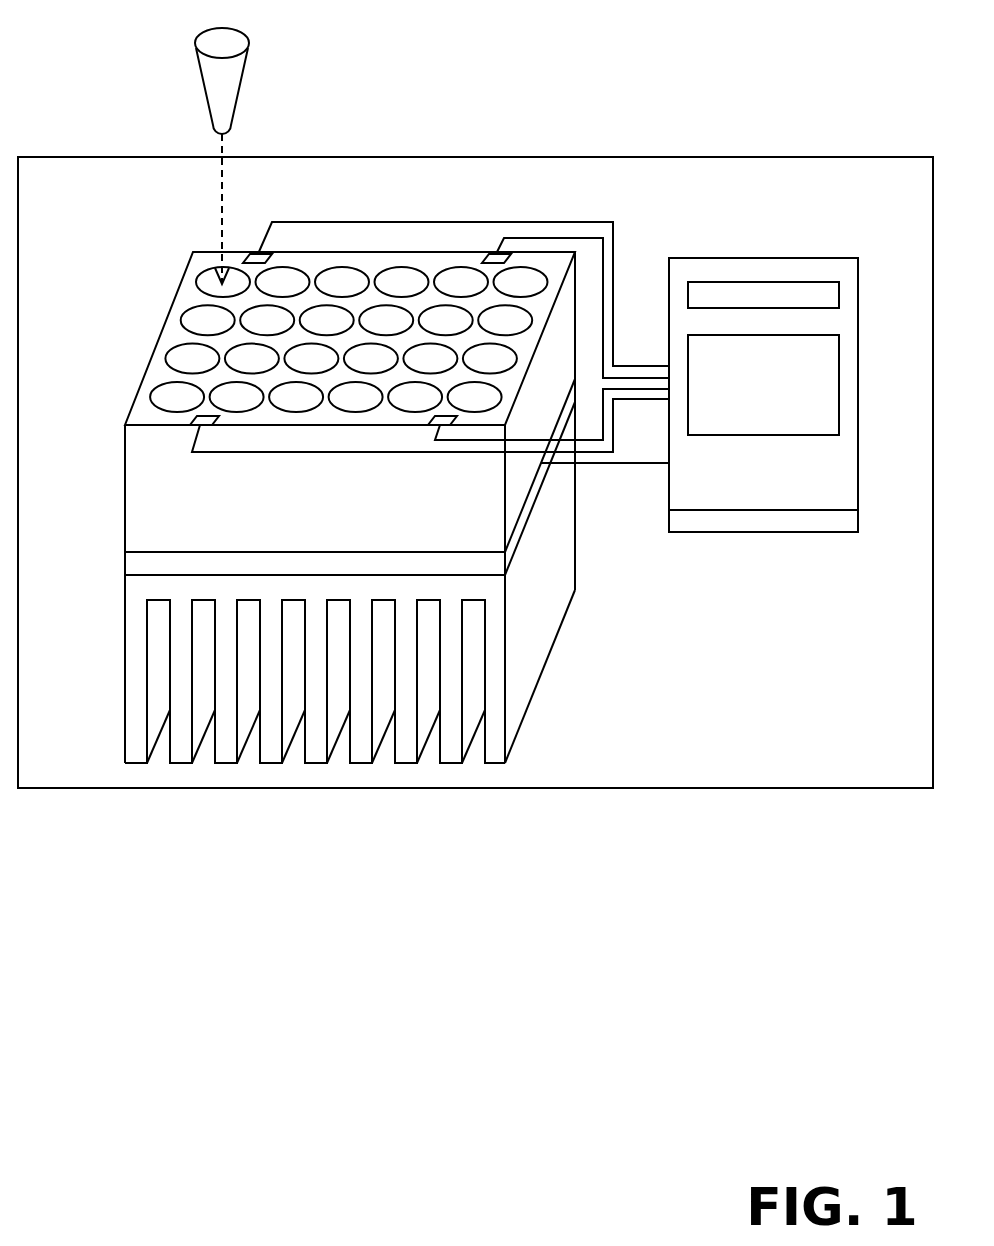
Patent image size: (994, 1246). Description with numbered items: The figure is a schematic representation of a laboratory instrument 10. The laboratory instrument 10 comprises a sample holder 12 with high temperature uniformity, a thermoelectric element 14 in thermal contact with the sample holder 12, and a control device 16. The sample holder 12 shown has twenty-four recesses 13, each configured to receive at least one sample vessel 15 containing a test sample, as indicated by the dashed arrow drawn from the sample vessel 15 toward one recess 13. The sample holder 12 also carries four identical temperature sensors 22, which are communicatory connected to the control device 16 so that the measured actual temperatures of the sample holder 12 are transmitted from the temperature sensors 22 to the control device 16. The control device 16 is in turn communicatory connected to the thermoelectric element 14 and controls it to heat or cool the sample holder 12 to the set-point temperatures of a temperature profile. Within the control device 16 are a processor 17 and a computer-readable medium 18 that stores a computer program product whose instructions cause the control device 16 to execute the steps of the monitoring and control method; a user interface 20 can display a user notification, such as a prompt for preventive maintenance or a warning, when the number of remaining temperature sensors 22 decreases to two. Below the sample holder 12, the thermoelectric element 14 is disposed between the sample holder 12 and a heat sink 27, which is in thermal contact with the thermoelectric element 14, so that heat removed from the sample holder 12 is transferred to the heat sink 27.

The laboratory instrument 10 is at (733, 157).
The sample holder 12 is at (141, 502).
The recess 13 is at (207, 280).
The thermoelectric element 14 is at (153, 563).
The sample vessel 15 is at (230, 87).
The control device 16 is at (669, 497).
The processor 17 is at (797, 295).
The computer-readable medium 18 is at (795, 413).
The user interface 20 is at (763, 533).
The temperature sensor 22 is at (429, 365).
The heat sink 27 is at (138, 610).